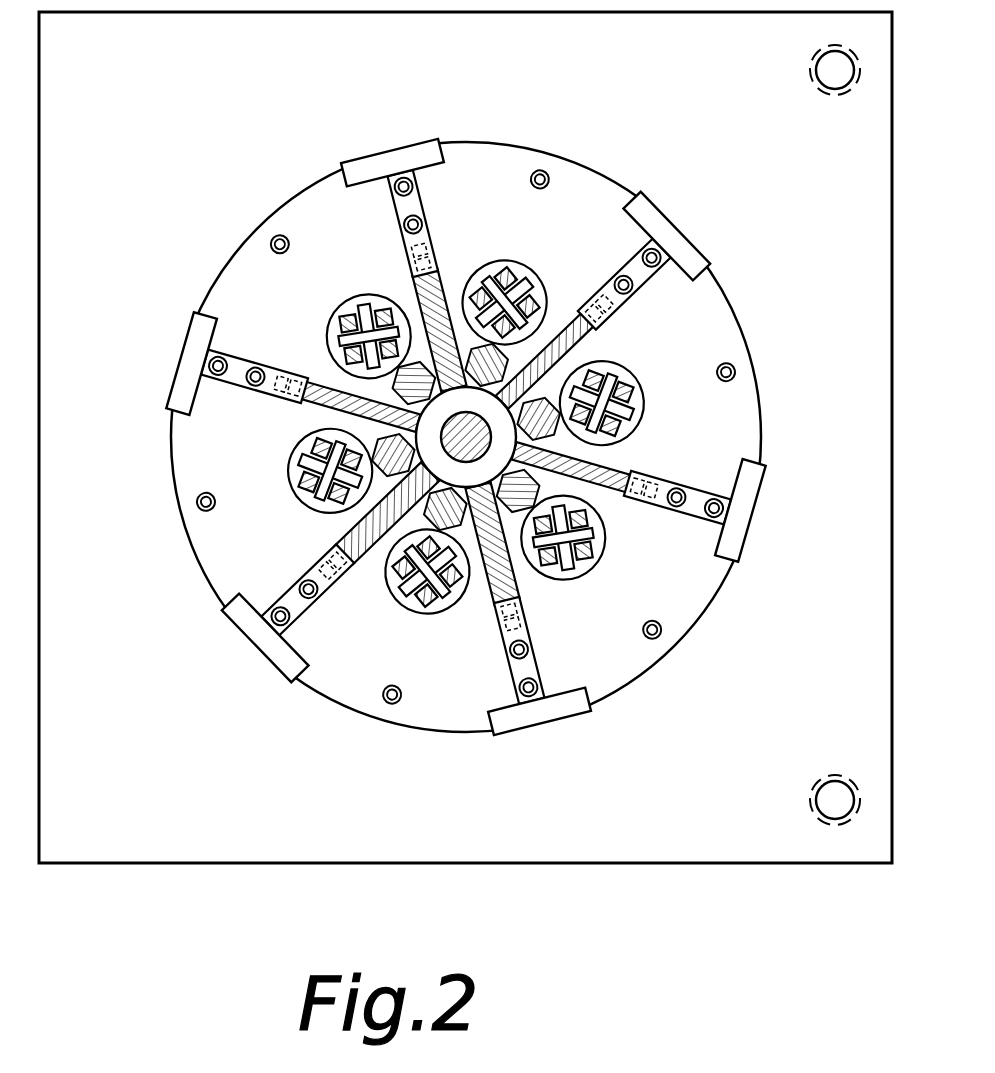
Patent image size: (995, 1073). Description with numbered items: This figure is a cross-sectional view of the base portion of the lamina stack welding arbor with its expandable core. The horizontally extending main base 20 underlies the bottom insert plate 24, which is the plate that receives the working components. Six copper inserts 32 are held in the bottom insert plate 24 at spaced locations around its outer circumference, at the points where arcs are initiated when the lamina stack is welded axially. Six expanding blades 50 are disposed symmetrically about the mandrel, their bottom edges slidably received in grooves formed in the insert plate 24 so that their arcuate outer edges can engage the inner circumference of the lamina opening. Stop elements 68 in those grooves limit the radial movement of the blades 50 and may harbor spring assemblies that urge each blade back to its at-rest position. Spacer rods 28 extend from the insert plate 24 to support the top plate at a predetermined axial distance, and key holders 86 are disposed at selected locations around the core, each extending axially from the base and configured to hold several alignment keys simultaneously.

The main base 20 is at (622, 848).
The bottom insert plate 24 is at (622, 665).
The spacer rods 28 is at (348, 415).
The copper inserts 32 is at (390, 144).
The expanding blades 50 is at (453, 278).
The stop elements 68 is at (400, 205).
The key holders 86 is at (510, 262).